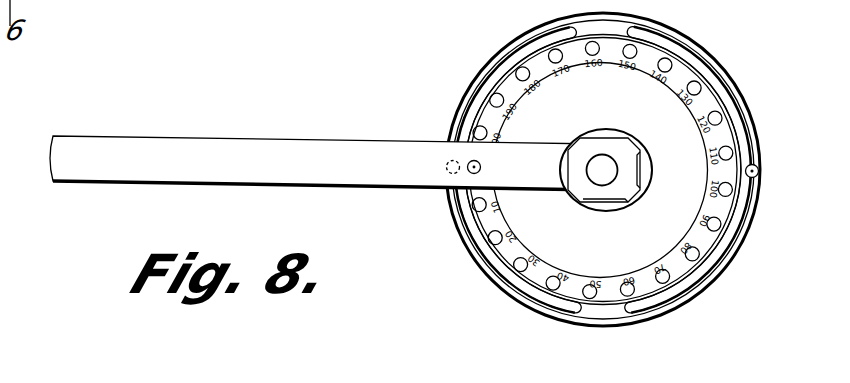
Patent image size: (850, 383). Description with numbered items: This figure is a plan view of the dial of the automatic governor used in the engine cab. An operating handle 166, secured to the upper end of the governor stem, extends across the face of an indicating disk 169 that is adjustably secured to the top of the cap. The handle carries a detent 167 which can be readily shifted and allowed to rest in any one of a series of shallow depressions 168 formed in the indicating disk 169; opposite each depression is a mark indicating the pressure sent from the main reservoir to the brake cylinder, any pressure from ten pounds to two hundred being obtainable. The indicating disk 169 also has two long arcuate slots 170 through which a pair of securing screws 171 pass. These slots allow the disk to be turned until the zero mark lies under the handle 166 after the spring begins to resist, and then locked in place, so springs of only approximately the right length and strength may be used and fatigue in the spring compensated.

The operating handle 166 is at (338, 112).
The detent 167 is at (528, 132).
The shallow depressions 168 is at (812, 132).
The indicating disk 169 is at (650, 7).
The arcuate slots 170 is at (810, 242).
The securing screws 171 is at (812, 185).